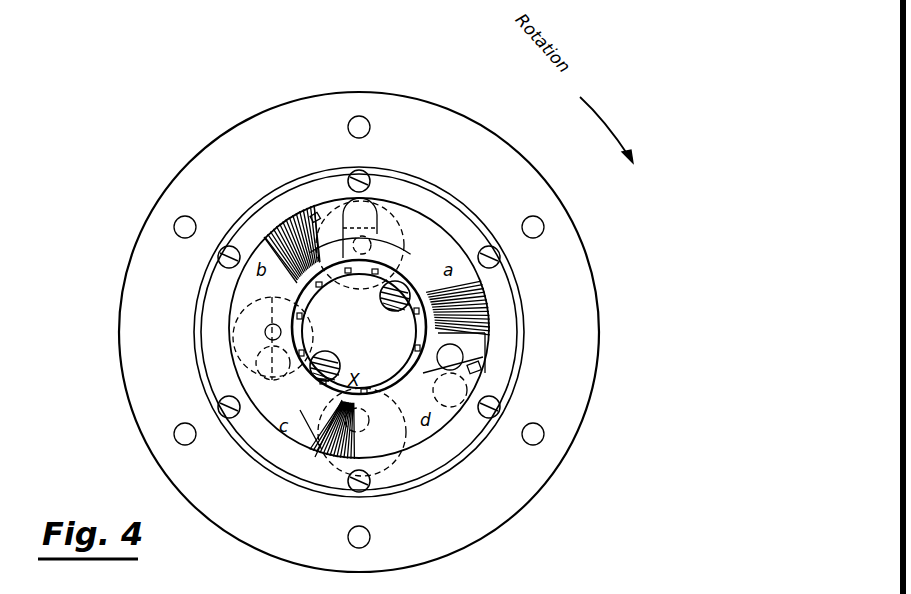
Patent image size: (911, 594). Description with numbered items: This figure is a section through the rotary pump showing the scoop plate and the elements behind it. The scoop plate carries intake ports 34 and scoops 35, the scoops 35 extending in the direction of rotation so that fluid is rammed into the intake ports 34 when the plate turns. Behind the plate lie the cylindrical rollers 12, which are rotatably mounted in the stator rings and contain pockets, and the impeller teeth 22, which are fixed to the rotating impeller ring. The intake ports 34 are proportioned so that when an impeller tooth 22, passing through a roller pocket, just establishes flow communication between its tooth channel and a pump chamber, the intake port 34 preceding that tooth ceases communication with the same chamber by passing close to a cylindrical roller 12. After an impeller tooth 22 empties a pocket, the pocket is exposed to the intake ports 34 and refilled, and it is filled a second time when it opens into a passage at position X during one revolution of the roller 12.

The cylindrical rollers 12 is at (387, 232).
The impeller teeth 22 is at (380, 230).
The intake ports 34 is at (315, 214).
The scoops 35 is at (302, 262).